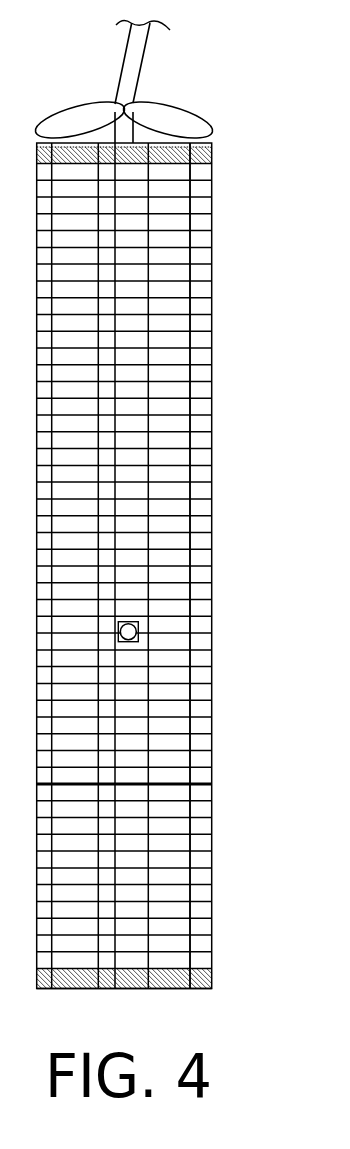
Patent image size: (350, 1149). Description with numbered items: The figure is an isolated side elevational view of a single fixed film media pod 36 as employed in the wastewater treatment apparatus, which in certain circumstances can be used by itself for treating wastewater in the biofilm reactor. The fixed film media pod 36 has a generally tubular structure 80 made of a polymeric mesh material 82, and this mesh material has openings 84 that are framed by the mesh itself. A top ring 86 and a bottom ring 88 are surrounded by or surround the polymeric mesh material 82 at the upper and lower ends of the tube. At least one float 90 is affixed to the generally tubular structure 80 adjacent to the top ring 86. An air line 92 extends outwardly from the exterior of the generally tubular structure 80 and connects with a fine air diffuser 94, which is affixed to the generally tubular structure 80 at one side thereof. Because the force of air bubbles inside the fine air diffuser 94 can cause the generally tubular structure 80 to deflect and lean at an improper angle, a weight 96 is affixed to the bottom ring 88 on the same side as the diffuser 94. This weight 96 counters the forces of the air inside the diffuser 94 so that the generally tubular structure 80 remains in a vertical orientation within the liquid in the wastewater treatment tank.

The fixed film media pod 36 is at (258, 227).
The generally tubular structure 80 is at (195, 412).
The polymeric mesh material 82 is at (175, 342).
The openings 84 is at (205, 368).
The top ring 86 is at (205, 163).
The bottom ring 88 is at (210, 980).
The float 90 is at (175, 116).
The air line 92 is at (137, 54).
The fine air diffuser 94 is at (139, 633).
The weight 96 is at (173, 989).